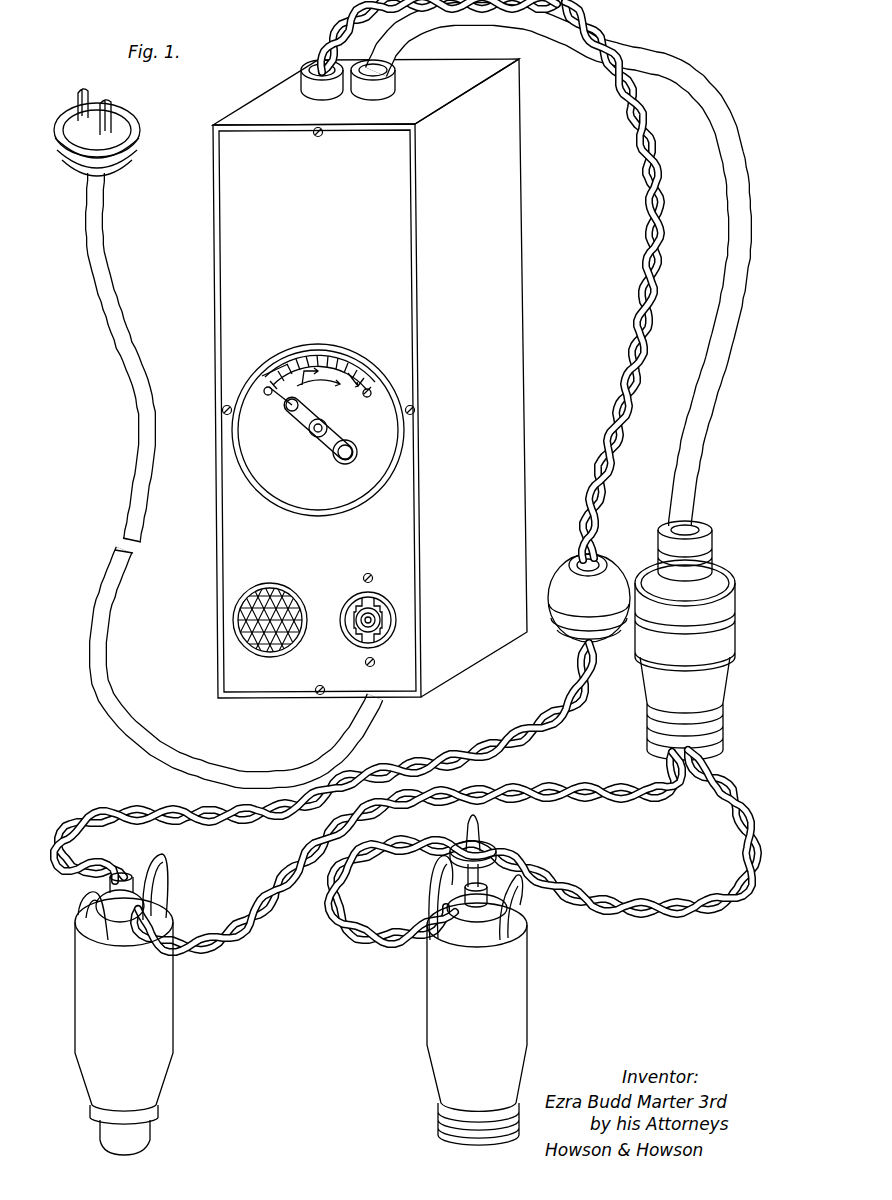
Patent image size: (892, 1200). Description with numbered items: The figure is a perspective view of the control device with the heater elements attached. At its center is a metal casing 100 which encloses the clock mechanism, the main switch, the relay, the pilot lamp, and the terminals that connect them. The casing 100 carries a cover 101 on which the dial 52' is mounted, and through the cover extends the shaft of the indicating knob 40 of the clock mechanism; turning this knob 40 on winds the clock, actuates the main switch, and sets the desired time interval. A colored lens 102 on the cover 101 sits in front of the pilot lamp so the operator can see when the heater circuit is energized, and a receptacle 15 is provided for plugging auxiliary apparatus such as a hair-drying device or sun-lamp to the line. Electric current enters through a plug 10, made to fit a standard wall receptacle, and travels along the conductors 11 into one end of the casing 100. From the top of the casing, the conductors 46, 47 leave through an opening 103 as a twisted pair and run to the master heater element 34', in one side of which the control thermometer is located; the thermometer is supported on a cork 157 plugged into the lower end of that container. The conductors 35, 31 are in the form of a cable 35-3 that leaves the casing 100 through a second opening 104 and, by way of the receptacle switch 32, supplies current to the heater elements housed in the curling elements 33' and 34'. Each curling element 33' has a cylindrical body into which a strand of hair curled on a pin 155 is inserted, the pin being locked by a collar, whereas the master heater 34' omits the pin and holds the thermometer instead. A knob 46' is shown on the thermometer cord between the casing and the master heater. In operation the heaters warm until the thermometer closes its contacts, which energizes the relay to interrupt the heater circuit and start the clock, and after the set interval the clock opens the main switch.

The plug 10 is at (122, 120).
The conductors 11 is at (150, 393).
The receptacle 15 is at (383, 620).
The conductor 31 is at (696, 802).
The receptacle switch 32 is at (716, 576).
The curling element 33' is at (497, 1000).
The master heater element 34' is at (141, 989).
The conductor 35 is at (665, 786).
The output cable 35-3 is at (700, 406).
The indicating knob 40 is at (300, 419).
The conductor 46 is at (359, 438).
The cord knob 46' is at (577, 607).
The conductor 47 is at (640, 362).
The dial 52' is at (349, 430).
The metal casing 100 is at (512, 216).
The cover 101 is at (402, 216).
The colored lens 102 is at (283, 603).
The opening 103 is at (306, 80).
The opening 104 is at (386, 90).
The pin 155 is at (490, 834).
The cork 157 is at (146, 1140).